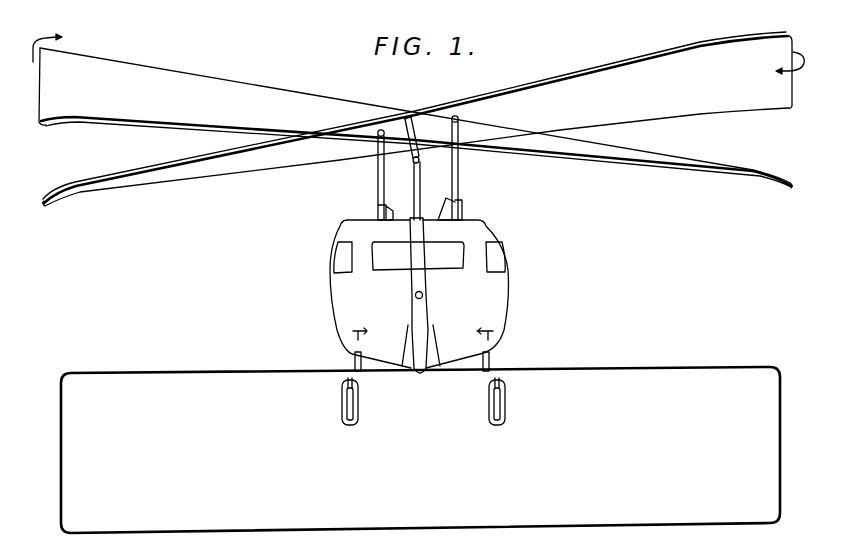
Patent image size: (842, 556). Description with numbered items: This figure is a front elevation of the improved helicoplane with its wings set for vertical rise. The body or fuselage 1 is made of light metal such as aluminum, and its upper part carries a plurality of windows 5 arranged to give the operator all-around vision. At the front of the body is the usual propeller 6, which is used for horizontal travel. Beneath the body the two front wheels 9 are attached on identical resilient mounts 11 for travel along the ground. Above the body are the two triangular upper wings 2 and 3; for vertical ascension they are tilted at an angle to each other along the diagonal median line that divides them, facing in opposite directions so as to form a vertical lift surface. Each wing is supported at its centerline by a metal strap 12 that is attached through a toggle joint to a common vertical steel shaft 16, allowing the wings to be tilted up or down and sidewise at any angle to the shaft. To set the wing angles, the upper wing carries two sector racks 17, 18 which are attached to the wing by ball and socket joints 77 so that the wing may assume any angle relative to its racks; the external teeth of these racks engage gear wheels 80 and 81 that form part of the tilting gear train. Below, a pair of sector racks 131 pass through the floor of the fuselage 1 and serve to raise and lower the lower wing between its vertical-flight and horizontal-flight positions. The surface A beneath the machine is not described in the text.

The body or fuselage 1 is at (500, 295).
The upper wing 2 is at (638, 164).
The upper wing 3 is at (705, 108).
The windows 5 is at (447, 253).
The propeller 6 is at (426, 323).
The front wheels 9 is at (348, 405).
The resilient mounts 11 is at (353, 333).
The metal strap 12 is at (414, 136).
The vertical steel shaft 16 is at (414, 188).
The sector rack 17 is at (458, 172).
The sector rack 18 is at (377, 182).
The ball and socket joints 77 is at (377, 136).
The gear wheel 80 is at (378, 207).
The gear wheel 81 is at (463, 203).
The sector racks 131 is at (355, 363).
The platform A is at (588, 374).